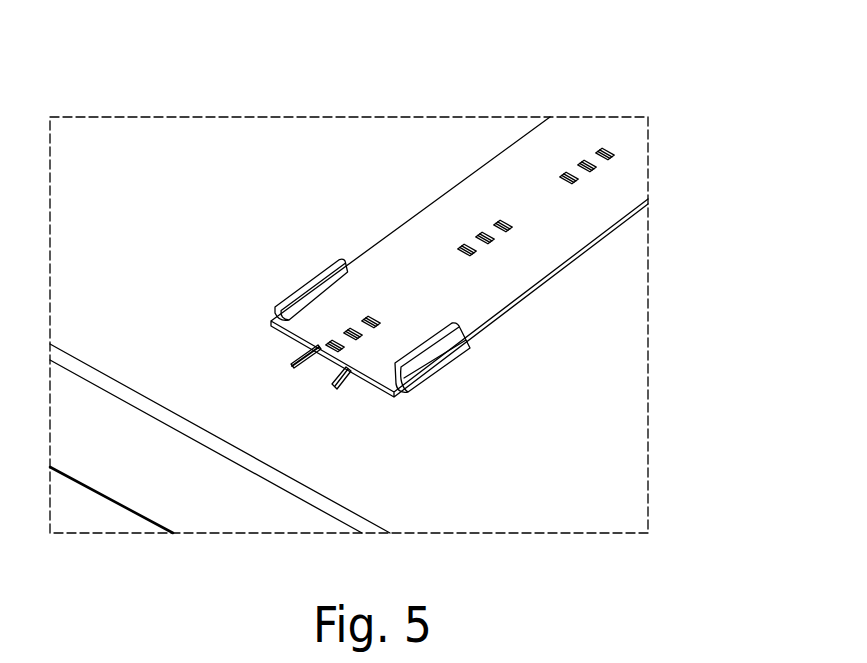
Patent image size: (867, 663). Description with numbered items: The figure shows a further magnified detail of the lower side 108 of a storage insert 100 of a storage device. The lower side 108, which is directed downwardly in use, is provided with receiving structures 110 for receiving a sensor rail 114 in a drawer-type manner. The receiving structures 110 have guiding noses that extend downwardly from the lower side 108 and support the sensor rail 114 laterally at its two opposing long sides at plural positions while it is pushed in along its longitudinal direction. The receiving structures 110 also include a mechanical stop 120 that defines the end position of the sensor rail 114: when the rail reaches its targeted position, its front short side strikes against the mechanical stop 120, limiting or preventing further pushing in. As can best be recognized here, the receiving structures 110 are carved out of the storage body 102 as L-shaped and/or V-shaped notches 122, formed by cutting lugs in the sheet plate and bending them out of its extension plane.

The storage insert 100 is at (633, 75).
The storage body 102 is at (499, 516).
The lower side 108 is at (295, 140).
The receiving structures 110 is at (310, 292).
The sensor rail 114 is at (467, 217).
The mechanical stop 120 is at (331, 370).
The L-shaped and/or V-shaped notches 122 is at (442, 335).